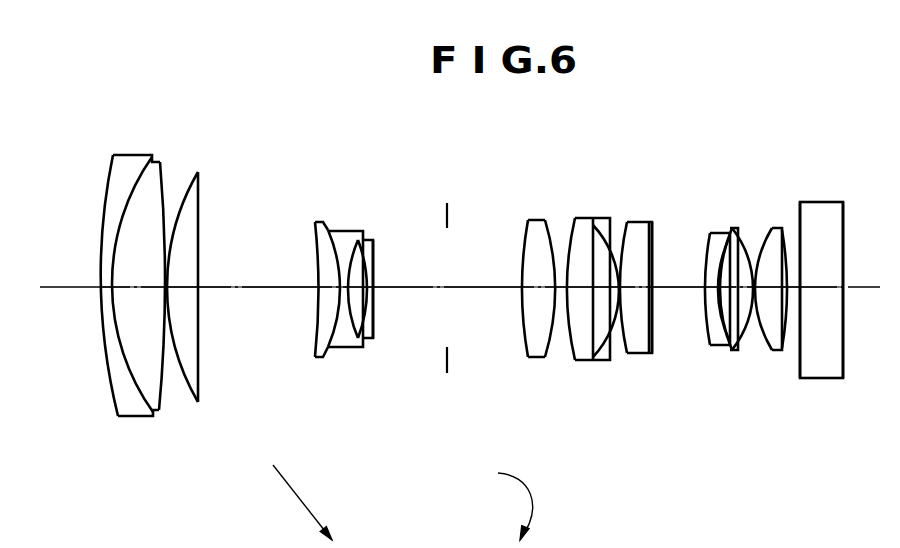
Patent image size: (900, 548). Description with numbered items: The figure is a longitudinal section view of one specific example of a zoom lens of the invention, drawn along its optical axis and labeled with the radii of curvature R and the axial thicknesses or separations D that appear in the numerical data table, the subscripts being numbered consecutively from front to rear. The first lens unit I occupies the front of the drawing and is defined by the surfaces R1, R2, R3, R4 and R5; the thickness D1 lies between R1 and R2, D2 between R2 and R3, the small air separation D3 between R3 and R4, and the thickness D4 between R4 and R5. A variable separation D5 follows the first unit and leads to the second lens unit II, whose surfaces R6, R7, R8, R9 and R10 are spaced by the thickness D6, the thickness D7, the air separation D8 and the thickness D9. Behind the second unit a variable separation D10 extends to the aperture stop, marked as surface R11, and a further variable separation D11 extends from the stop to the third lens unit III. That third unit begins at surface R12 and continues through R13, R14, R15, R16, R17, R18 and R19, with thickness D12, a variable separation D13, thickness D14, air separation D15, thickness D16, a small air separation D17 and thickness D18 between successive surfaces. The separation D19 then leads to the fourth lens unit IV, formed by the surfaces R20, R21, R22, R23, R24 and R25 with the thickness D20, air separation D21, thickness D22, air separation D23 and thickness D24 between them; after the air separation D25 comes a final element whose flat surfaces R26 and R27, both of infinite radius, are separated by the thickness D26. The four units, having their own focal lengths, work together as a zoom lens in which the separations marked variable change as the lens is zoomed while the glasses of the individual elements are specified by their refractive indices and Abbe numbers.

The radius of curvature R1 is at (107, 180).
The radius of curvature R2 is at (133, 175).
The radius of curvature R3 is at (163, 180).
The radius of curvature R4 is at (181, 190).
The radius of curvature R5 is at (203, 192).
The radius of curvature R6 is at (316, 240).
The radius of curvature R7 is at (329, 237).
The radius of curvature R8 is at (348, 248).
The radius of curvature R9 is at (363, 250).
The radius of curvature R10 is at (375, 258).
The aperture stop R11 is at (447, 213).
The radius of curvature R12 is at (522, 240).
The radius of curvature R13 is at (545, 220).
The radius of curvature R14 is at (568, 240).
The radius of curvature R15 is at (585, 222).
The radius of curvature R16 is at (608, 237).
The radius of curvature R17 is at (622, 237).
The radius of curvature R18 is at (648, 233).
The radius of curvature R19 is at (652, 235).
The radius of curvature R20 is at (705, 250).
The radius of curvature R21 is at (722, 237).
The radius of curvature R22 is at (733, 250).
The radius of curvature R23 is at (755, 247).
The radius of curvature R24 is at (780, 230).
The radius of curvature R25 is at (790, 247).
The radius of curvature R26 is at (800, 230).
The radius of curvature R27 is at (843, 212).
The axial thickness D1 is at (105, 352).
The axial thickness D2 is at (135, 292).
The axial separation D3 is at (165, 325).
The axial thickness D4 is at (197, 335).
The variable axial separation D5 is at (248, 292).
The axial thickness D6 is at (318, 330).
The axial thickness D7 is at (340, 338).
The axial separation D8 is at (357, 344).
The axial thickness D9 is at (367, 344).
The variable axial separation D10 is at (403, 297).
The variable axial separation D11 is at (477, 294).
The axial thickness D12 is at (527, 322).
The variable axial separation D13 is at (550, 330).
The axial thickness D14 is at (562, 327).
The axial separation D15 is at (581, 332).
The axial thickness D16 is at (601, 327).
The axial separation D17 is at (618, 337).
The axial thickness D18 is at (636, 330).
The axial separation D19 is at (672, 297).
The axial thickness D20 is at (703, 328).
The axial separation D21 is at (720, 340).
The axial thickness D22 is at (740, 347).
The axial separation D23 is at (762, 333).
The axial thickness D24 is at (784, 353).
The axial separation D25 is at (791, 347).
The axial thickness D26 is at (821, 290).